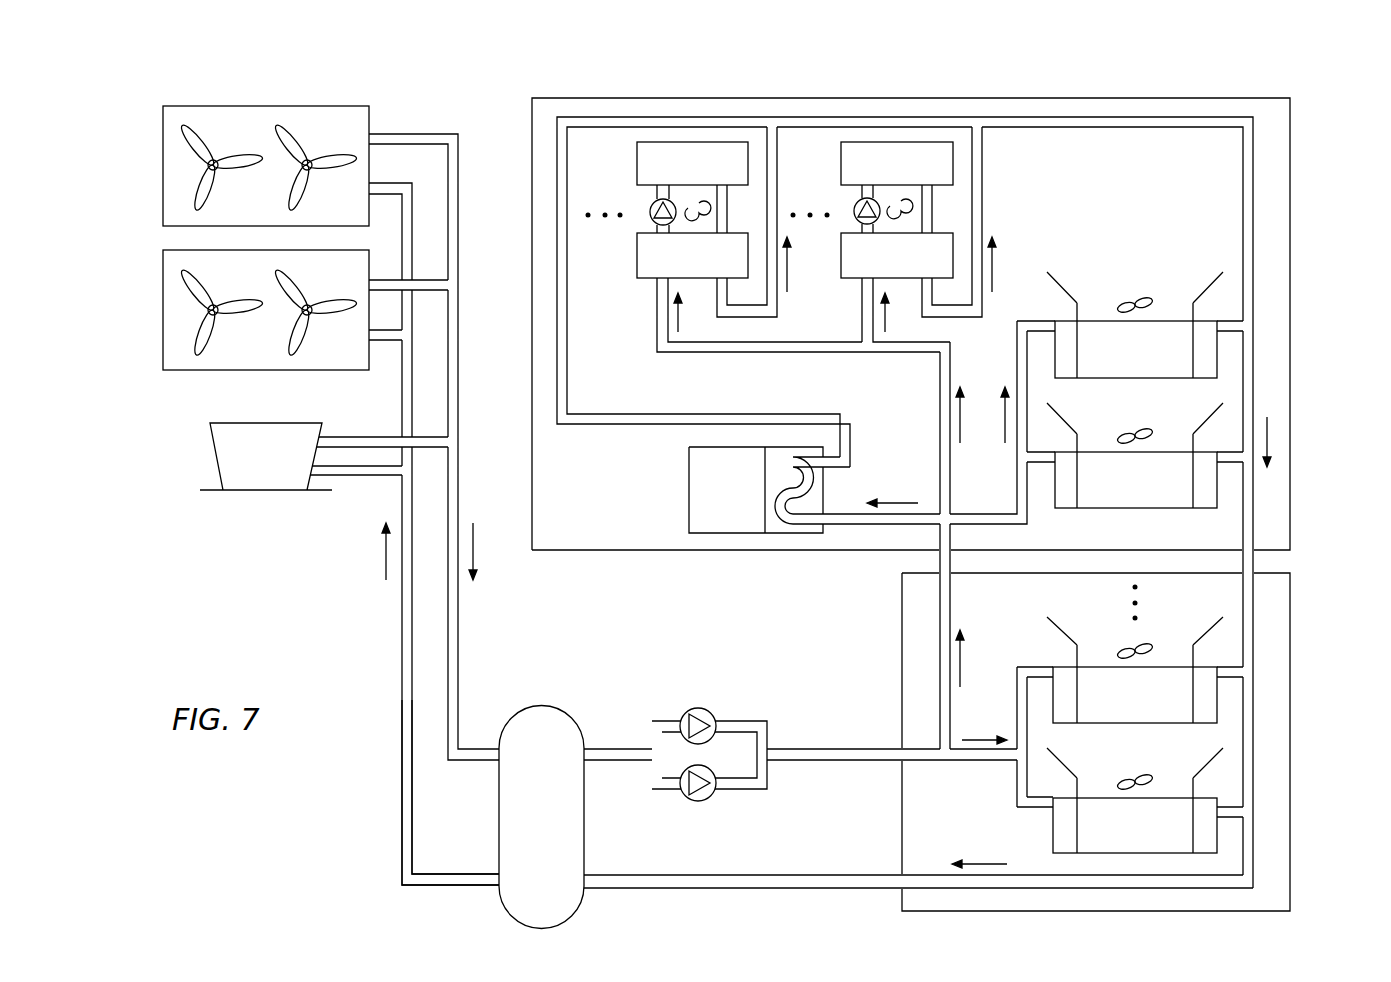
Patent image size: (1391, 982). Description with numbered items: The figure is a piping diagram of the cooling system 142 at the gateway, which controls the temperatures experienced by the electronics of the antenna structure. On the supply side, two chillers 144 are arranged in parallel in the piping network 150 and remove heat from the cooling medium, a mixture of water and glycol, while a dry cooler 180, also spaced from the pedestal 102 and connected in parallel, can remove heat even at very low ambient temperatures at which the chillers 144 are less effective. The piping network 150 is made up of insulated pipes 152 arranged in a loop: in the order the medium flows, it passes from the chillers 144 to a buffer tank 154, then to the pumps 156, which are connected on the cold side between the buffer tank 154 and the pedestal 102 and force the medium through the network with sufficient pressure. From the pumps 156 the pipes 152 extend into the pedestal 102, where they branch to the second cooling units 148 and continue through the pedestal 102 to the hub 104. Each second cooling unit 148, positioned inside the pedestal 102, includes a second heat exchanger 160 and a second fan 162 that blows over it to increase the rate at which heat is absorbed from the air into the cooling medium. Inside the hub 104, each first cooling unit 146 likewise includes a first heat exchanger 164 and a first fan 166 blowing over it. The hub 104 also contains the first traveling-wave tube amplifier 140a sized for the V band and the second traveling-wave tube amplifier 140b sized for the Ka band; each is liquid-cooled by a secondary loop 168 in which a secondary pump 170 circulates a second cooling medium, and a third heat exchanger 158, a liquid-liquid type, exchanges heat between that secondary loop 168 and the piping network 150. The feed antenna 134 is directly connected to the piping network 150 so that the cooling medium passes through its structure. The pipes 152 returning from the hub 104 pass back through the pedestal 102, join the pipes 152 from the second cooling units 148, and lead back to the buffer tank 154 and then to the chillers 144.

The pedestal 102 is at (1291, 655).
The hub 104 is at (1292, 150).
The feed antenna 134 is at (712, 535).
The first traveling-wave tube amplifier 140a is at (730, 142).
The second traveling-wave tube amplifier 140b is at (933, 142).
The cooling system 142 is at (368, 65).
The chiller 144 is at (163, 120).
The first cooling unit 146 is at (1217, 365).
The second cooling unit 148 is at (1217, 710).
The piping network 150 is at (402, 827).
The pipe 152 is at (447, 680).
The buffer tank 154 is at (505, 908).
The pump 156 is at (714, 772).
The third heat exchanger 158 is at (645, 280).
The second heat exchanger 160 is at (1102, 379).
The second fan 162 is at (1152, 302).
The first heat exchanger 164 is at (1102, 724).
The first fan 166 is at (1150, 645).
The secondary loop 168 is at (727, 207).
The secondary pump 170 is at (650, 208).
The dry cooler 180 is at (211, 446).